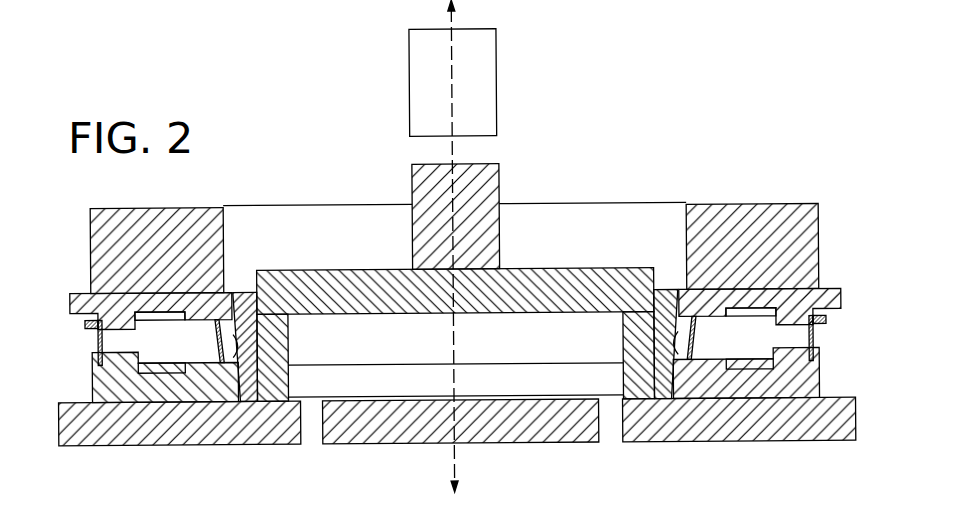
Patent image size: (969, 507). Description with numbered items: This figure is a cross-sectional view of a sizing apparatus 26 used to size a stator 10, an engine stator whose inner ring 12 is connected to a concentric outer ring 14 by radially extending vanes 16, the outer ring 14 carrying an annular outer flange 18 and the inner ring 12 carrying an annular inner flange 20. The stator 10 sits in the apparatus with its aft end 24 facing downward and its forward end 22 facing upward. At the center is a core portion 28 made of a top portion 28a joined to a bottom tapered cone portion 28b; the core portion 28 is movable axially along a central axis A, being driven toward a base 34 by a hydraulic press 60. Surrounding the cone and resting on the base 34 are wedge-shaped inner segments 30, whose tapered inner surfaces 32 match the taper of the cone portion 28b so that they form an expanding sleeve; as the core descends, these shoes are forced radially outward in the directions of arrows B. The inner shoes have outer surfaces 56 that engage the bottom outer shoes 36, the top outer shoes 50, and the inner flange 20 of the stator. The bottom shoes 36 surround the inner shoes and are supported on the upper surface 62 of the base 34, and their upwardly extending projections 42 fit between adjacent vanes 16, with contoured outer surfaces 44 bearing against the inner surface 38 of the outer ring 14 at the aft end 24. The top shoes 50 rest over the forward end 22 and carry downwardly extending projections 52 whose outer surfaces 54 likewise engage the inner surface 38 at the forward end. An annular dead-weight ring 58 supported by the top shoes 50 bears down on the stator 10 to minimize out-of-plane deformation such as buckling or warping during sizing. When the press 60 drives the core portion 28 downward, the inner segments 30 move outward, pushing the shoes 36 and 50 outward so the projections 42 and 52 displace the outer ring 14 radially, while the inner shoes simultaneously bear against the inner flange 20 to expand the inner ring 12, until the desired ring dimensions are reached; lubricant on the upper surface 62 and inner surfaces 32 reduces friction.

The stator 10 is at (171, 373).
The inner ring 12 is at (243, 400).
The outer ring 14 is at (97, 344).
The vanes 16 is at (160, 325).
The outer flange 18 is at (95, 321).
The inner flange 20 is at (232, 324).
The forward end 22 is at (180, 320).
The aft end 24 is at (174, 361).
The apparatus 26 is at (658, 172).
The core portion 28 is at (500, 194).
The top portion 28a is at (502, 225).
The tapered cone portion 28b is at (388, 268).
The inner segments 30 is at (256, 352).
The inner surfaces 32 is at (268, 378).
The base 34 is at (727, 437).
The outer shoes 36 is at (153, 384).
The inner surface 38 is at (62, 414).
The projections 42 is at (110, 355).
The outer surfaces 44 is at (100, 357).
The outer shoes 50 is at (118, 314).
The projections 52 is at (108, 320).
The outer surfaces 54 is at (92, 316).
The outer surfaces 56 is at (247, 331).
The dead-weight ring 58 is at (98, 205).
The hydraulic press 60 is at (498, 78).
The upper surface 62 is at (365, 400).
The central axis A is at (456, 14).
The arrows B is at (254, 468).